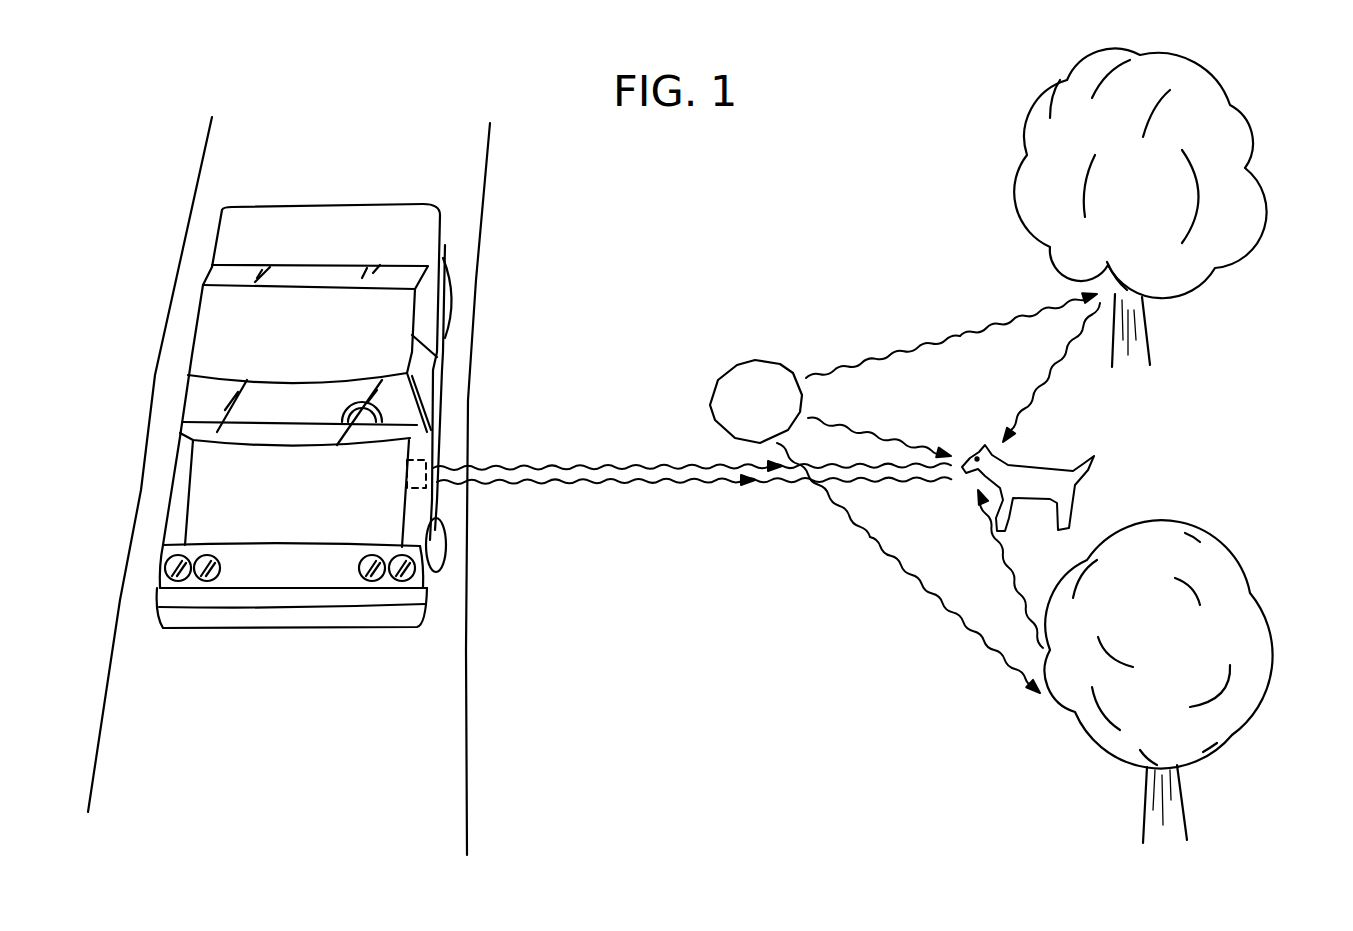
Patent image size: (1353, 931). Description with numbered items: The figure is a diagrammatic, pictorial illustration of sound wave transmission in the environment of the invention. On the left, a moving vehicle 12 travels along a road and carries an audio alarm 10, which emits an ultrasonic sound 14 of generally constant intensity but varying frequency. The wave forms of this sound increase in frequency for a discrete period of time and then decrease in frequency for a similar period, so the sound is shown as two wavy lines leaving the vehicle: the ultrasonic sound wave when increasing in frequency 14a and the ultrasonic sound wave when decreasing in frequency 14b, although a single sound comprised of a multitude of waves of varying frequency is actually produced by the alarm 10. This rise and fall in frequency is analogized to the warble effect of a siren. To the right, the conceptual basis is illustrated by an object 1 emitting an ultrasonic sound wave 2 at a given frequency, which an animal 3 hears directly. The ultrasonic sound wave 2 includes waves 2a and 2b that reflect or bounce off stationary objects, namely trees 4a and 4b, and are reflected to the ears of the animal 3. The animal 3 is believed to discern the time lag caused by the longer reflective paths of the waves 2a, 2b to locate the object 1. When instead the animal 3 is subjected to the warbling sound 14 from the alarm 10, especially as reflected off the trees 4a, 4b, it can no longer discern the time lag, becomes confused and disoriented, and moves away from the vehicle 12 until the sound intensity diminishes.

The moving vehicle 12 is at (280, 210).
The audio alarm 10 is at (437, 457).
The ultrasonic sound 14 is at (692, 435).
The ultrasonic sound wave when increasing in frequency 14a is at (672, 481).
The ultrasonic sound wave when decreasing in frequency 14b is at (638, 466).
The object 1 is at (768, 376).
The ultrasonic sound wave 2 is at (862, 430).
The reflected wave 2a is at (955, 332).
The reflected wave 2b is at (873, 537).
The animal 3 is at (1042, 466).
The tree 4a is at (1237, 145).
The tree 4b is at (1240, 593).